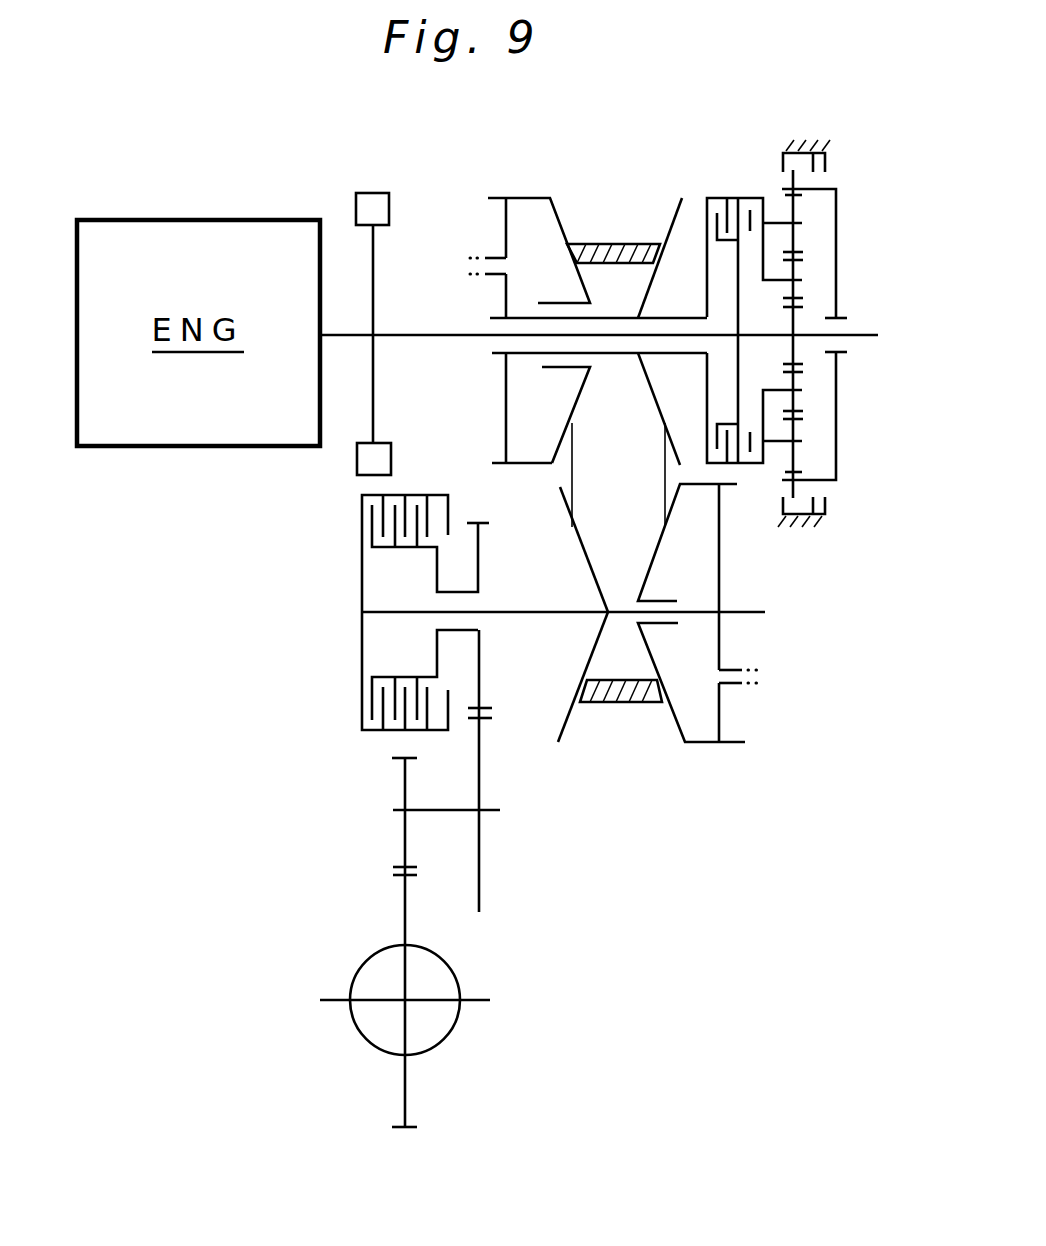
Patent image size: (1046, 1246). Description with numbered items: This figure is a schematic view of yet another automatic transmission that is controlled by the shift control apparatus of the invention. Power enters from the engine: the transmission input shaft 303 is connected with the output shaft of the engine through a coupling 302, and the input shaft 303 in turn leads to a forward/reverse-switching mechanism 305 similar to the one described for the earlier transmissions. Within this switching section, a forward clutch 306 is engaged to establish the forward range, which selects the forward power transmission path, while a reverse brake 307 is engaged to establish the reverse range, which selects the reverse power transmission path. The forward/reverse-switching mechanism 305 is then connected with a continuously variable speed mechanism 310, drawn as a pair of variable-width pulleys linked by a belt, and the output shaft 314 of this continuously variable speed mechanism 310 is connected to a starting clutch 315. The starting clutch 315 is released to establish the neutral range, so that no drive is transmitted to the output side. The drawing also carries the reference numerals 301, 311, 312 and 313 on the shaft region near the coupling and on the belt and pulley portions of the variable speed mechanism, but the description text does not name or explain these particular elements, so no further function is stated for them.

The input shaft 301 is at (352, 334).
The coupling 302 is at (364, 193).
The transmission input shaft 303 is at (448, 338).
The forward/reverse-switching mechanism 305 is at (842, 208).
The forward clutch 306 is at (720, 197).
The reverse brake 307 is at (828, 164).
The continuously variable speed mechanism 310 is at (562, 176).
The belt 311 is at (563, 218).
The secondary pulley 312 is at (681, 718).
The belt 313 is at (572, 472).
The output shaft 314 is at (513, 614).
The starting clutch 315 is at (362, 697).